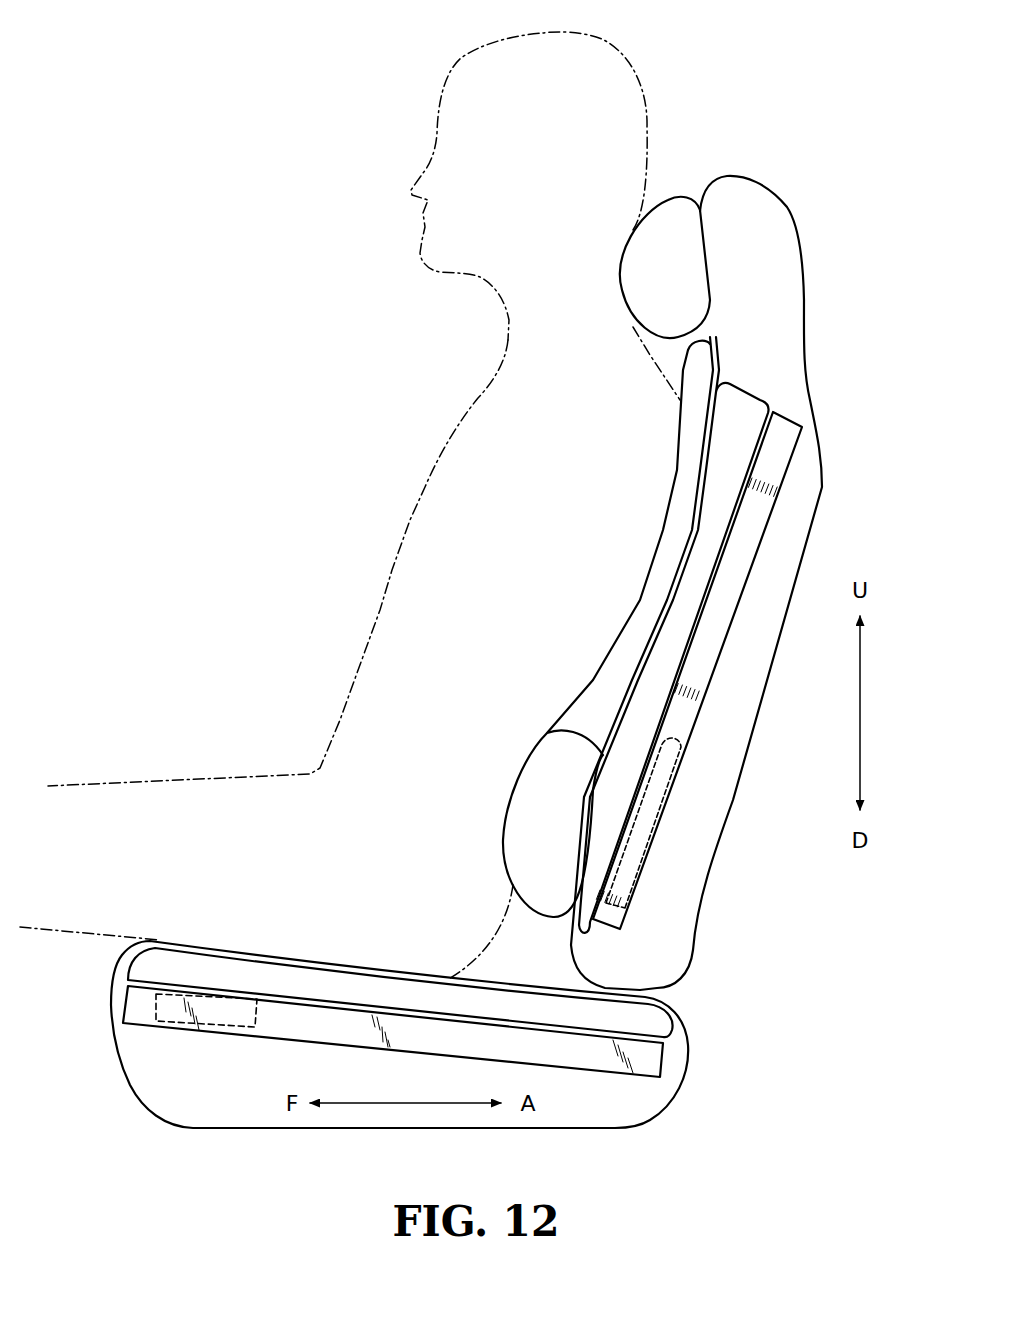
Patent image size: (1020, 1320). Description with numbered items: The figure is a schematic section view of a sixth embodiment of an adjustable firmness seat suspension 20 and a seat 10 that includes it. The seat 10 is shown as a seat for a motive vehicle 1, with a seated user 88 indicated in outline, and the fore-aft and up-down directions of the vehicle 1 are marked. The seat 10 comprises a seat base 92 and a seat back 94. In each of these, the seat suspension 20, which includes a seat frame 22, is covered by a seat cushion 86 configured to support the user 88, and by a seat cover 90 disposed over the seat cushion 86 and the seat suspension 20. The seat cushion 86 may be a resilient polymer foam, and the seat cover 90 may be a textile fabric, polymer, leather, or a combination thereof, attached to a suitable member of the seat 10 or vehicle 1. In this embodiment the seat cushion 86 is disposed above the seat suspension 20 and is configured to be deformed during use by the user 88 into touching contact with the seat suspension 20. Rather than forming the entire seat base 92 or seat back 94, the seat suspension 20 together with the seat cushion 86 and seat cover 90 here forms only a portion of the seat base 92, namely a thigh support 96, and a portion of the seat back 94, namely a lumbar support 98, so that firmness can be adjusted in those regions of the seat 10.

The vehicle 1 is at (821, 68).
The seat 10 is at (483, 689).
The seat suspension 20 is at (509, 783).
The seat frame 22 is at (731, 577).
The seat cushion 86 is at (753, 395).
The user 88 is at (658, 142).
The seat cover 90 is at (780, 203).
The seat base 92 is at (131, 1086).
The seat back 94 is at (731, 833).
The thigh support 96 is at (259, 1020).
The lumbar support 98 is at (674, 758).